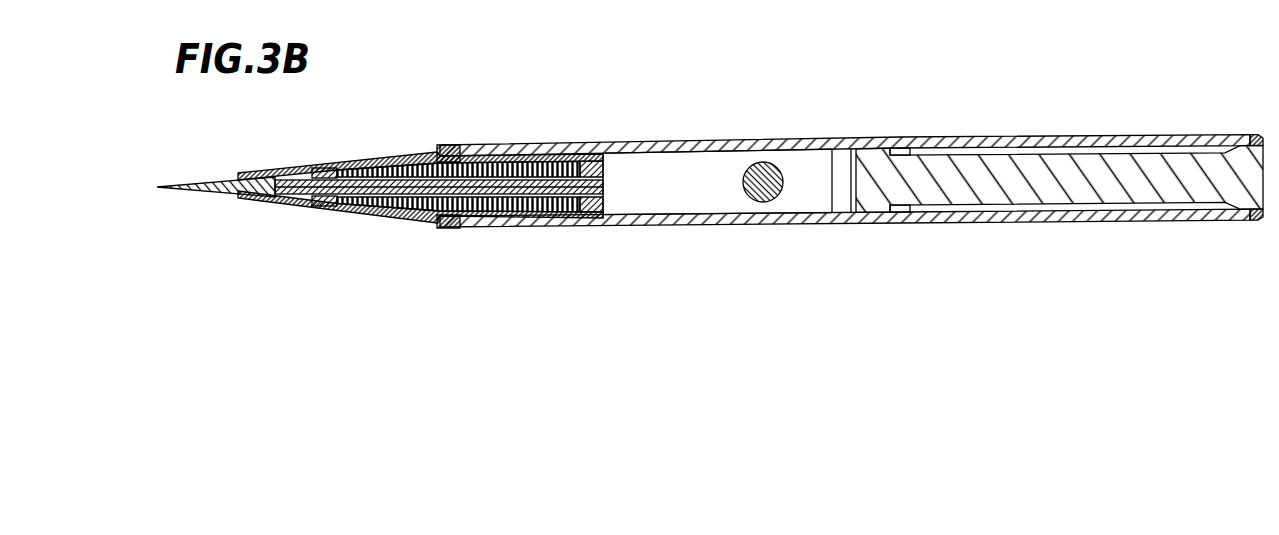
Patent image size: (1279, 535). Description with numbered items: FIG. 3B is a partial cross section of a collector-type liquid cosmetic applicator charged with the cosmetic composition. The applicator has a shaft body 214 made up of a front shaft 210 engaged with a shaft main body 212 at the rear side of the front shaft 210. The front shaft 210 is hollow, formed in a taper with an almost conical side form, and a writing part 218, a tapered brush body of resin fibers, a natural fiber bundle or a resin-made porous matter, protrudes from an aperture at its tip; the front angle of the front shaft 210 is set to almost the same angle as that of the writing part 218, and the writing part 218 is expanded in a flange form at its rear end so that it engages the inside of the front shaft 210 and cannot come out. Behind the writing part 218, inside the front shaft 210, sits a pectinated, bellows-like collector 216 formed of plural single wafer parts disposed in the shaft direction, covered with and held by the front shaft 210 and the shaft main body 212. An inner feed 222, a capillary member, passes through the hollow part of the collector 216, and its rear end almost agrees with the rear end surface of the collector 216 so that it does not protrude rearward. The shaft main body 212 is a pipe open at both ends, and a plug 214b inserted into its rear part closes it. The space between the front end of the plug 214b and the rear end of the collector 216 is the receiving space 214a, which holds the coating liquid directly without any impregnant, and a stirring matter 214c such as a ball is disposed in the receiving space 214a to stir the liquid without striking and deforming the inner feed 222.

The front shaft 210 is at (420, 192).
The shaft main body 212 is at (653, 147).
The shaft body 214 is at (933, 181).
The receiving space 214a is at (637, 195).
The plug 214b is at (1062, 166).
The stirring matter 214c is at (766, 202).
The collector 216 is at (430, 150).
The writing part 218 is at (192, 184).
The inner feed 222 is at (414, 224).